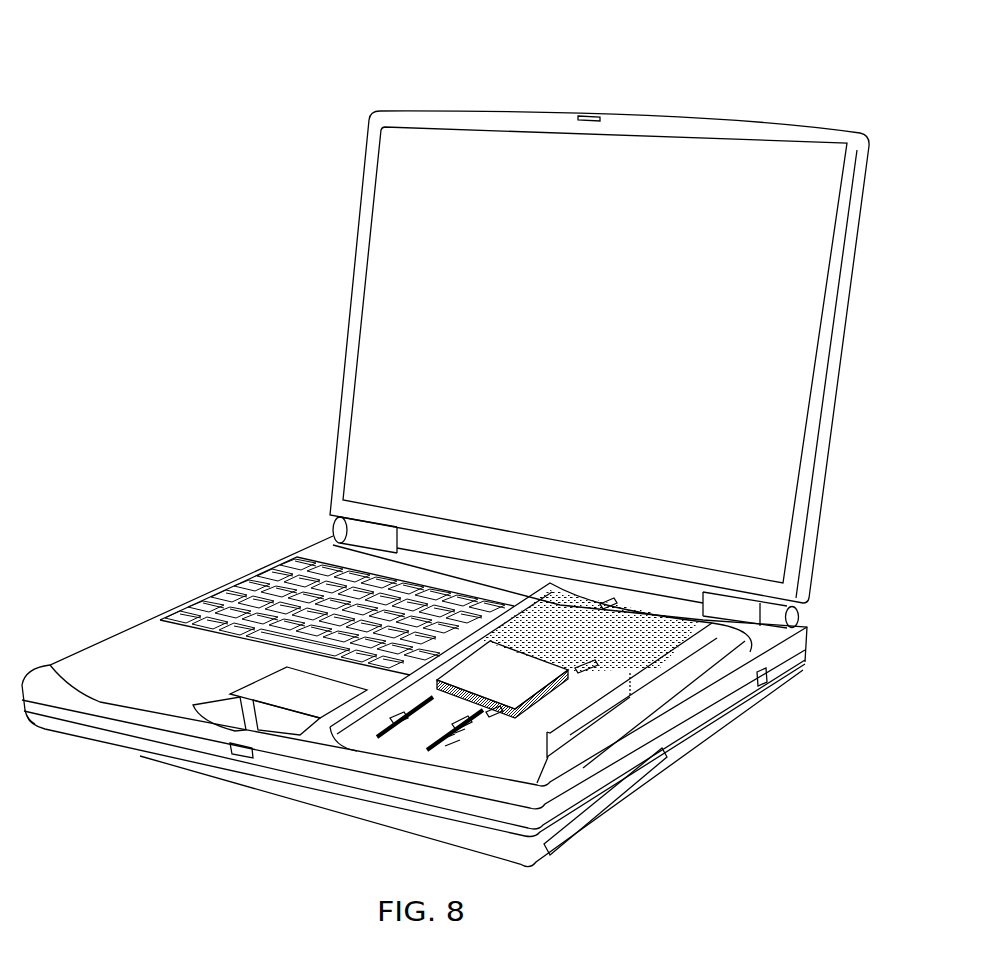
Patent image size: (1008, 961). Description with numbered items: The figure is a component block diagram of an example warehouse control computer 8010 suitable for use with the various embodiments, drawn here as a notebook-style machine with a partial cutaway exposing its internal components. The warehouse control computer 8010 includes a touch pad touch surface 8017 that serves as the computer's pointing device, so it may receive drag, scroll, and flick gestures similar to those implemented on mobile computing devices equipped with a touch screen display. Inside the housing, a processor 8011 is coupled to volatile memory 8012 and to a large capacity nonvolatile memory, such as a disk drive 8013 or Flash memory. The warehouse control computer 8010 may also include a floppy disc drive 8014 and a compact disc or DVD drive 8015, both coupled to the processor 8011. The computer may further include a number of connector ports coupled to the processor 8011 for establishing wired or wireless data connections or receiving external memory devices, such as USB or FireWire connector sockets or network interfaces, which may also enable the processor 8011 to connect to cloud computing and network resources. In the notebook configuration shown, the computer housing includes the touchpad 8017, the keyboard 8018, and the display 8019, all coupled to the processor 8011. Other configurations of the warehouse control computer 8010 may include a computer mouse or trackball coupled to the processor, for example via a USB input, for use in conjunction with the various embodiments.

The warehouse control computer 8010 is at (765, 101).
The processor 8011 is at (517, 684).
The volatile memory 8012 is at (430, 730).
The disk drive 8013 is at (553, 770).
The floppy disc drive 8014 is at (630, 720).
The compact disc (CD) or DVD drive 8015 is at (697, 658).
The touch pad touch surface 8017 is at (261, 692).
The keyboard 8018 is at (213, 603).
The display 8019 is at (800, 537).